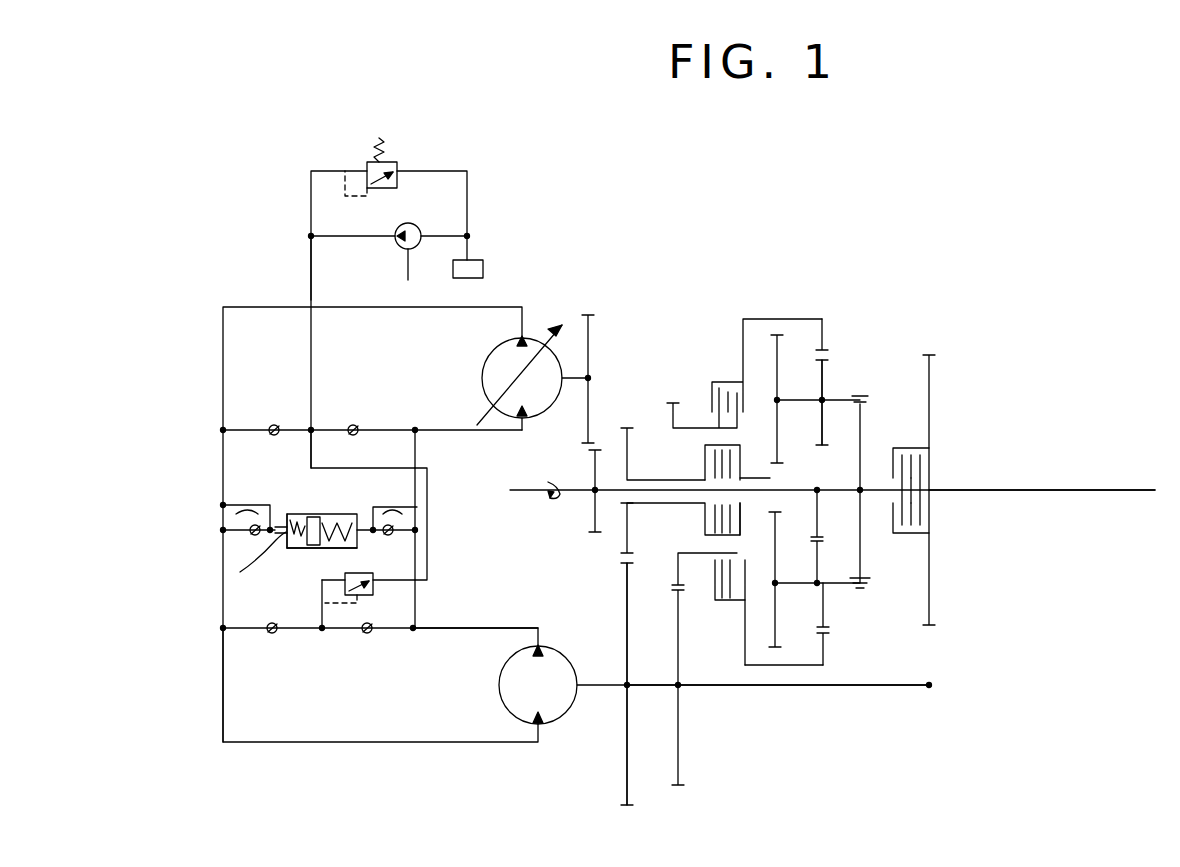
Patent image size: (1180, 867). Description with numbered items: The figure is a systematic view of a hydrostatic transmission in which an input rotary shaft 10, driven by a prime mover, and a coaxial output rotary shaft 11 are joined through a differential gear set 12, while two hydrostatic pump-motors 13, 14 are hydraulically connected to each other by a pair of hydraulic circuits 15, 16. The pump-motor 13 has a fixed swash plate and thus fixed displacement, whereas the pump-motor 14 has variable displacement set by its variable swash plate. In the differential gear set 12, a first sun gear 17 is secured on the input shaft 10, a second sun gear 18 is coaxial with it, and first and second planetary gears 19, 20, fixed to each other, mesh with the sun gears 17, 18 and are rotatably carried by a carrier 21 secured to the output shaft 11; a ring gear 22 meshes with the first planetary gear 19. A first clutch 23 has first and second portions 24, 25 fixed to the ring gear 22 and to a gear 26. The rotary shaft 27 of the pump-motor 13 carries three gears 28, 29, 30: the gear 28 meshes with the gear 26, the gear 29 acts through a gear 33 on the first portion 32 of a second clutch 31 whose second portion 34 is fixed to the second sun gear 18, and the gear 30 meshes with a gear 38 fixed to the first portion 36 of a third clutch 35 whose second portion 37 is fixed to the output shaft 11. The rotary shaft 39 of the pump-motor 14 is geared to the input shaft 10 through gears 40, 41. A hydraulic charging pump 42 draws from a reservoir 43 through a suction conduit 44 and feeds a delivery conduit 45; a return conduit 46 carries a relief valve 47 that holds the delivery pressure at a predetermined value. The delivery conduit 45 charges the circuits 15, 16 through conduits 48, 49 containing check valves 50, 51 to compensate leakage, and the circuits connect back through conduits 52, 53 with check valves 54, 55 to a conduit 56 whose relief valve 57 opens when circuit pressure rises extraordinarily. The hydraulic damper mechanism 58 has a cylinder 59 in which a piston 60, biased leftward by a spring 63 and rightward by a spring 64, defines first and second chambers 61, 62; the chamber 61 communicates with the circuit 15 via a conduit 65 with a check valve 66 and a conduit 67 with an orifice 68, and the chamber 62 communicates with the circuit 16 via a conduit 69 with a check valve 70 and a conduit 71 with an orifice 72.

The input rotary shaft 10 is at (520, 492).
The output rotary shaft 11 is at (1078, 490).
The differential gear set 12 is at (828, 318).
The hydrostatic pump-motor 13 is at (498, 700).
The hydrostatic pump-motor 14 is at (490, 364).
The hydraulic circuit 15 is at (460, 430).
The hydraulic circuit 16 is at (422, 307).
The first sun gear 17 is at (820, 500).
The second sun gear 18 is at (772, 512).
The first planetary gear 19 is at (822, 420).
The second planetary gear 20 is at (776, 432).
The carrier 21 is at (866, 436).
The ring gear 22 is at (762, 319).
The first clutch 23 is at (714, 598).
The first portion 24 is at (736, 604).
The second portion 25 is at (750, 568).
The gear 26 is at (676, 558).
The rotary shaft 27 is at (654, 684).
The gear 28 is at (680, 748).
The gear 29 is at (630, 760).
The gear 30 is at (934, 688).
The second clutch 31 is at (700, 516).
The first portion 32 is at (724, 532).
The gear 33 is at (626, 538).
The second portion 34 is at (774, 556).
The third clutch 35 is at (936, 446).
The first portion 36 is at (902, 448).
The second portion 37 is at (922, 490).
The gear 38 is at (932, 560).
The rotary shaft 39 is at (592, 366).
The gear 40 is at (590, 402).
The gear 41 is at (594, 468).
The hydraulic charging pump 42 is at (406, 250).
The reservoir 43 is at (484, 268).
The suction conduit 44 is at (418, 236).
The delivery conduit 45 is at (324, 237).
The return conduit 46 is at (324, 171).
The relief valve 47 is at (388, 166).
The conduit 48 is at (388, 430).
The conduit 49 is at (242, 430).
The check valve 50 is at (350, 428).
The check valve 51 is at (278, 424).
The conduit 52 is at (412, 630).
The conduit 53 is at (232, 634).
The check valve 54 is at (366, 634).
The check valve 55 is at (276, 634).
The conduit 56 is at (422, 600).
The relief valve 57 is at (376, 590).
The hydraulic damper mechanism 58 is at (287, 512).
The cylinder 59 is at (334, 516).
The piston 60 is at (310, 516).
The first chamber 61 is at (430, 578).
The second chamber 62 is at (302, 552).
The spring 63 is at (350, 518).
The spring 64 is at (264, 574).
The conduit 65 is at (340, 550).
The check valve 66 is at (402, 542).
The conduit 67 is at (384, 508).
The orifice 68 is at (424, 486).
The conduit 69 is at (222, 530).
The check valve 70 is at (254, 536).
The conduit 71 is at (222, 505).
The orifice 72 is at (246, 502).